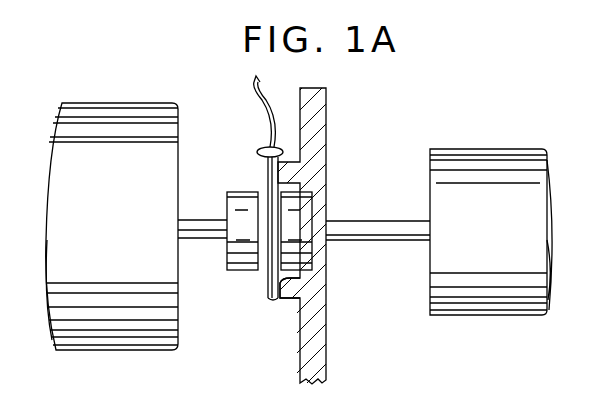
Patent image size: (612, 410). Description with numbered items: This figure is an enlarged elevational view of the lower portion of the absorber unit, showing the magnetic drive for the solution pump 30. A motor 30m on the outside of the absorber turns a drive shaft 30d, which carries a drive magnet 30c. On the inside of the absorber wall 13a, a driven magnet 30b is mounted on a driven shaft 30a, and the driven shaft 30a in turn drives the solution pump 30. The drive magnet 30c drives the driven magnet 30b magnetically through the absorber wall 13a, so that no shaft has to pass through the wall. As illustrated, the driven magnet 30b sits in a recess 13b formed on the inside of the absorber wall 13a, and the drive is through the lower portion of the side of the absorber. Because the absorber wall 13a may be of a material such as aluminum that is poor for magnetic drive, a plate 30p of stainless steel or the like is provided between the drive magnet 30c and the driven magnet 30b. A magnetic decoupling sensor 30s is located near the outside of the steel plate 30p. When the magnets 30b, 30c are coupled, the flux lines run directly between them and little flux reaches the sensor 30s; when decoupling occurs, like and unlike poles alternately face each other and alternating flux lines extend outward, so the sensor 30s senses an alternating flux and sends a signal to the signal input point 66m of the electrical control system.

The motor 30m is at (147, 220).
The drive shaft 30d is at (203, 226).
The drive magnet 30c is at (242, 270).
The plate 30p is at (263, 282).
The magnetic decoupling sensor 30s is at (262, 148).
The signal input point 66m is at (276, 69).
The driven magnet 30b is at (298, 212).
The absorber wall 13a is at (320, 112).
The recess 13b is at (292, 282).
The driven shaft 30a is at (370, 232).
The solution pump 30 is at (480, 228).